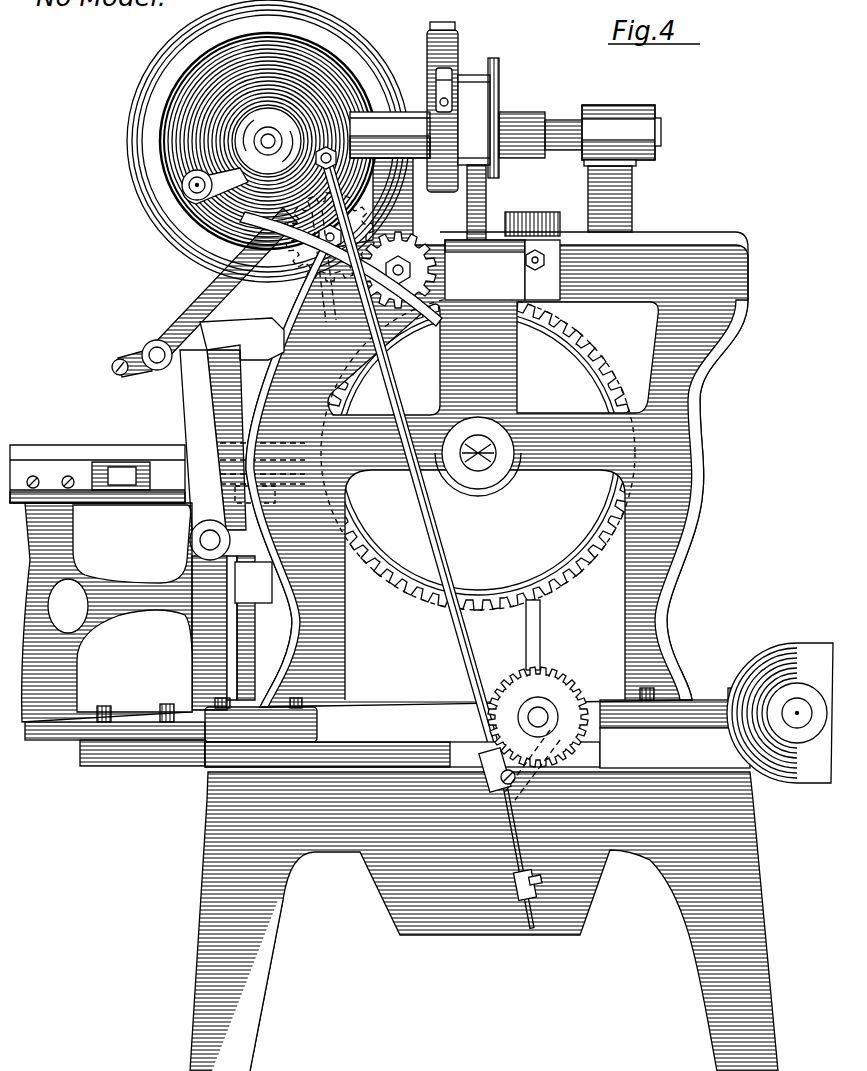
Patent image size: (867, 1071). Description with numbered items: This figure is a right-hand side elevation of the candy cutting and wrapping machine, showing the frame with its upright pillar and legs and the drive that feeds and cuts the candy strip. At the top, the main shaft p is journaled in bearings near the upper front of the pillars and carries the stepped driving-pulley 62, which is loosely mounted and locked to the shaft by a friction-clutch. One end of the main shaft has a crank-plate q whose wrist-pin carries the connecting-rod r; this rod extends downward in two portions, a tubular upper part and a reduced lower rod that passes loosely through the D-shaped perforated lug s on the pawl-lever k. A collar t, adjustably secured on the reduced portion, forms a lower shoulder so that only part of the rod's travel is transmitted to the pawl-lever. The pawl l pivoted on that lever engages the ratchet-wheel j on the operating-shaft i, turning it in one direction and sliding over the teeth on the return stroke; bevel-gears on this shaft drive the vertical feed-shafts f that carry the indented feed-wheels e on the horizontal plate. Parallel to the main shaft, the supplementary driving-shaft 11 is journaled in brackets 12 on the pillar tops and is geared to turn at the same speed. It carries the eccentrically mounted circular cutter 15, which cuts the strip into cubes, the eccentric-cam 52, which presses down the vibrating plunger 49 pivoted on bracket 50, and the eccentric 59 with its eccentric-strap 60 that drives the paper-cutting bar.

The supplementary driving-shaft 11 is at (540, 117).
The supporting arms or brackets 12 is at (622, 96).
The circular cutter 15 is at (497, 70).
The vibrating plunger 49 is at (490, 205).
The bracket 50 is at (543, 273).
The eccentric-cam 52 is at (474, 120).
The eccentric 59 is at (458, 50).
The eccentric-strap 60 is at (440, 24).
The stepped driving-pulley 62 is at (142, 200).
The main shaft p is at (258, 142).
The crank-plate q is at (322, 82).
The indented feed-wheels e is at (555, 220).
The connecting-rod r is at (430, 548).
The feed-shafts f is at (545, 644).
The operating-shaft i is at (556, 700).
The ratchet-wheel j is at (548, 717).
The pawl-lever k is at (565, 760).
The pawl l is at (488, 745).
The D-shaped perforated lug or projection s is at (478, 772).
The collar t is at (516, 890).